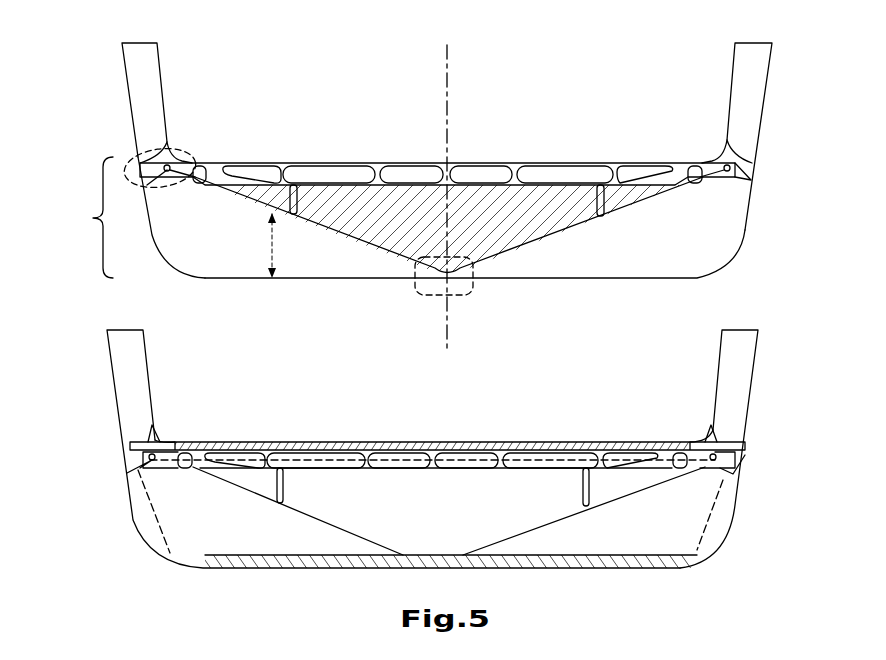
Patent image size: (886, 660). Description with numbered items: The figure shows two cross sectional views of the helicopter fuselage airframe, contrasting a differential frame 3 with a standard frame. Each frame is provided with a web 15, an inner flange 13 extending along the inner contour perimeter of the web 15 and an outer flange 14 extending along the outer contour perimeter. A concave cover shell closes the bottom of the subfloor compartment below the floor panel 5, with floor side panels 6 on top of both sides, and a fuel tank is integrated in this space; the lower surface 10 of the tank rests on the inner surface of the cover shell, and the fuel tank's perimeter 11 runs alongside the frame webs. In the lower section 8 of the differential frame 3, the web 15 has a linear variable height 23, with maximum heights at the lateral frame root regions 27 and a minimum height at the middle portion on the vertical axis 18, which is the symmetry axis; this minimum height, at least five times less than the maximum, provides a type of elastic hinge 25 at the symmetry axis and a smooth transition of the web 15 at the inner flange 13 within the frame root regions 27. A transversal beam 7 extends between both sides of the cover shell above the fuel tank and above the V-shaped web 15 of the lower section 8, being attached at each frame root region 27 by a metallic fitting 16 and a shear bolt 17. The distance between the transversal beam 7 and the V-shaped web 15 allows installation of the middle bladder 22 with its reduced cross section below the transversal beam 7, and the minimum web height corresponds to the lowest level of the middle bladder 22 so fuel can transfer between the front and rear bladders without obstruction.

The differential frame 3 is at (768, 78).
The floor panel 5 is at (546, 440).
The floor side panel 6 is at (731, 436).
The transversal beam 7 is at (584, 159).
The lower section 8 is at (137, 217).
The lower surface 10 is at (688, 549).
The fuel tank's perimeter 11 is at (137, 520).
The inner flange 13 is at (256, 165).
The outer flange 14 is at (126, 98).
The web 15 is at (220, 252).
The metallic fitting 16 is at (742, 172).
The shear bolt 17 is at (735, 158).
The vertical axis 18 is at (445, 50).
The middle bladder 22 is at (481, 204).
The linear variable height 23 is at (278, 246).
The elastic hinge 25 is at (476, 290).
The frame root region 27 is at (184, 146).